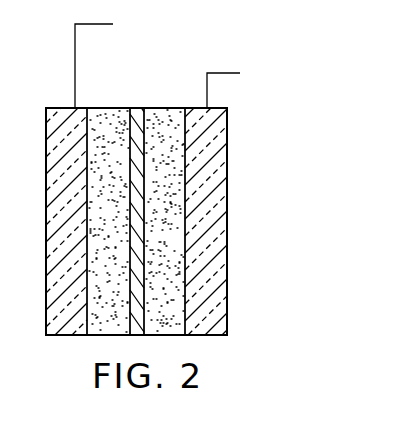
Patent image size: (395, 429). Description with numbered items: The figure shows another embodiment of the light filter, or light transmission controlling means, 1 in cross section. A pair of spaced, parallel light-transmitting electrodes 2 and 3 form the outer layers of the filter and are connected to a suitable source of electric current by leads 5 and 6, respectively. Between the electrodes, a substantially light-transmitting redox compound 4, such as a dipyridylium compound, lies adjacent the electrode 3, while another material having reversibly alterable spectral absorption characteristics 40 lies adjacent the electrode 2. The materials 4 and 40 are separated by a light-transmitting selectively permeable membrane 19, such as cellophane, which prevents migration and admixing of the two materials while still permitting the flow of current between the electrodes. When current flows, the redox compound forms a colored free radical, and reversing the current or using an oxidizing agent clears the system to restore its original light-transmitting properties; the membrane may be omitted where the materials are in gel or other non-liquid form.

The light filter 1 is at (44, 229).
The electrode 2 is at (51, 128).
The electrode 3 is at (213, 108).
The redox compound 4 is at (170, 108).
The lead 5 is at (75, 58).
The lead 6 is at (207, 87).
The selectively permeable membrane 19 is at (137, 108).
The material having reversibly alterable spectral absorption characteristics 40 is at (100, 108).